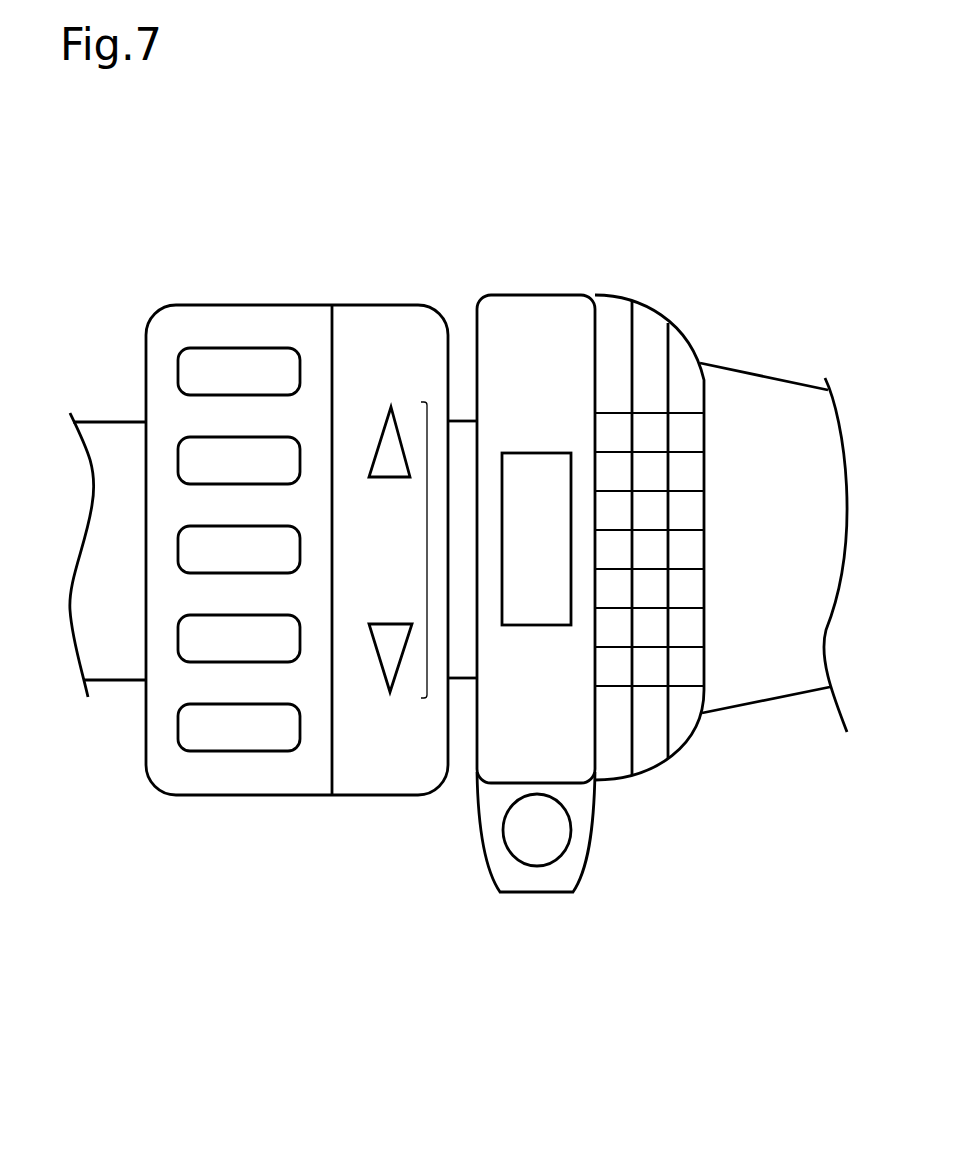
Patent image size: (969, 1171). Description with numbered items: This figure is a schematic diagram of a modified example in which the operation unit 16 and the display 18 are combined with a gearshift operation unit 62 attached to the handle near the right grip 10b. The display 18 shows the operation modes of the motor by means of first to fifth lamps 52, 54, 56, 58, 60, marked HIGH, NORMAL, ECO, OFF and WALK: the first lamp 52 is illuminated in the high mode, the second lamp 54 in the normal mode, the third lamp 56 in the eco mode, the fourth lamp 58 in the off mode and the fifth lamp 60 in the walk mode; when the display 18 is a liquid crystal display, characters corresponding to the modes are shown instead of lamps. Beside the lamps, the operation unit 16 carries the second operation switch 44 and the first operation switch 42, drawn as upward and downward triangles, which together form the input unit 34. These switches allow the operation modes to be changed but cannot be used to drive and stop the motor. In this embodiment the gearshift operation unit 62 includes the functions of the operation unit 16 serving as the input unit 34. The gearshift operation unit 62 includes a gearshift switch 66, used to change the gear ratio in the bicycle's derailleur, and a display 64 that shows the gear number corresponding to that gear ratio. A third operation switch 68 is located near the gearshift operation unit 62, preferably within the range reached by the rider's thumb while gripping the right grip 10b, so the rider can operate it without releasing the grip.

The right grip 10b is at (773, 700).
The operation unit 16 is at (390, 305).
The display 18 is at (232, 305).
The input unit 34 is at (427, 548).
The first operation switch 42 is at (395, 678).
The second operation switch 44 is at (396, 425).
The first lamp 52 is at (256, 348).
The second lamp 54 is at (256, 437).
The third lamp 56 is at (256, 526).
The fourth lamp 58 is at (256, 615).
The fifth lamp 60 is at (256, 704).
The gearshift operation unit 62 is at (697, 937).
The display 64 is at (555, 453).
The gearshift switch 66 is at (685, 742).
The third operation switch 68 is at (571, 838).